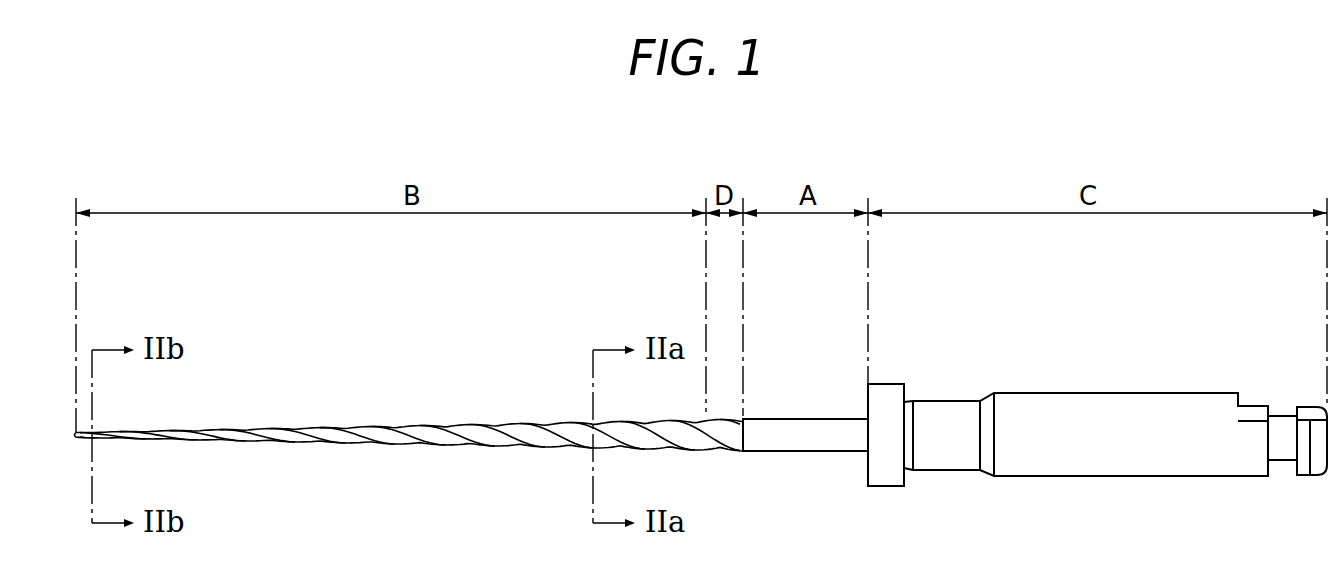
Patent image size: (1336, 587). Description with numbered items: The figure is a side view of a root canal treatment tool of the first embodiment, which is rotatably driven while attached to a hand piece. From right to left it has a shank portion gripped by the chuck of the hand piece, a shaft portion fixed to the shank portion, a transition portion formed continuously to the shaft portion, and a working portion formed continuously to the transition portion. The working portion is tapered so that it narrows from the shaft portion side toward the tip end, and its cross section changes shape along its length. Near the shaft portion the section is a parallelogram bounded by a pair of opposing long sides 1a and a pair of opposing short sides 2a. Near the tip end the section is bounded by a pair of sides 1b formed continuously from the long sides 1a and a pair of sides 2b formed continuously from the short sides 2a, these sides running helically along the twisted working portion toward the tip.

The long sides 1a is at (538, 436).
The sides 1b is at (234, 440).
The short sides 2a is at (508, 432).
The sides 2b is at (206, 431).